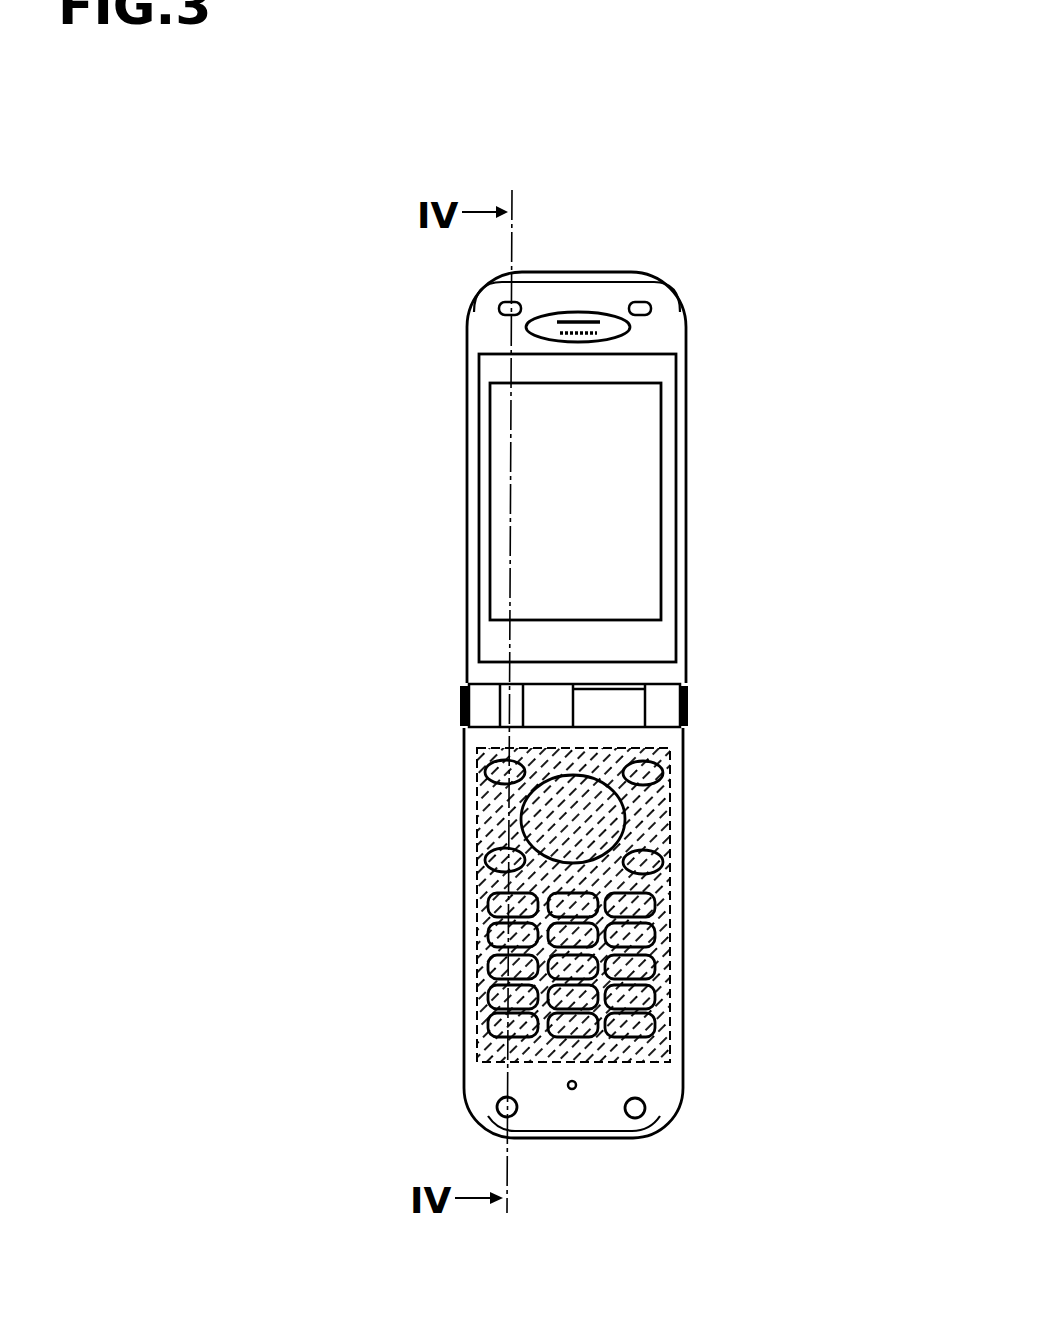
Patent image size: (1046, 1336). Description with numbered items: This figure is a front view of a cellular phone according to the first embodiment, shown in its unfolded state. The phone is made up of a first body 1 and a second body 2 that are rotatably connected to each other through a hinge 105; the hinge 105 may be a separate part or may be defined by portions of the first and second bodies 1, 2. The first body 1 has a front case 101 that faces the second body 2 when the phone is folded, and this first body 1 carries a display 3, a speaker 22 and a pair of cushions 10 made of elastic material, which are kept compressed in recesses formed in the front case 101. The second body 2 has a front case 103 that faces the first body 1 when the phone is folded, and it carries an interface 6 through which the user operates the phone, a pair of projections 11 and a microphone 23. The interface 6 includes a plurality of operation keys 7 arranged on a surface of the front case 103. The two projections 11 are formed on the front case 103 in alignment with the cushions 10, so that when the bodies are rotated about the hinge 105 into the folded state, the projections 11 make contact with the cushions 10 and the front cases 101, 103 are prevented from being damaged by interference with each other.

The first body 1 is at (653, 330).
The second body 2 is at (637, 1090).
The display 3 is at (618, 510).
The interface 6 is at (652, 805).
The operation keys 7 is at (600, 893).
The cushions 10 is at (515, 303).
The projections 11 is at (517, 1140).
The speaker 22 is at (575, 308).
The microphone 23 is at (574, 1092).
The front case 101 is at (674, 445).
The front case 103 is at (675, 927).
The hinge 105 is at (687, 710).